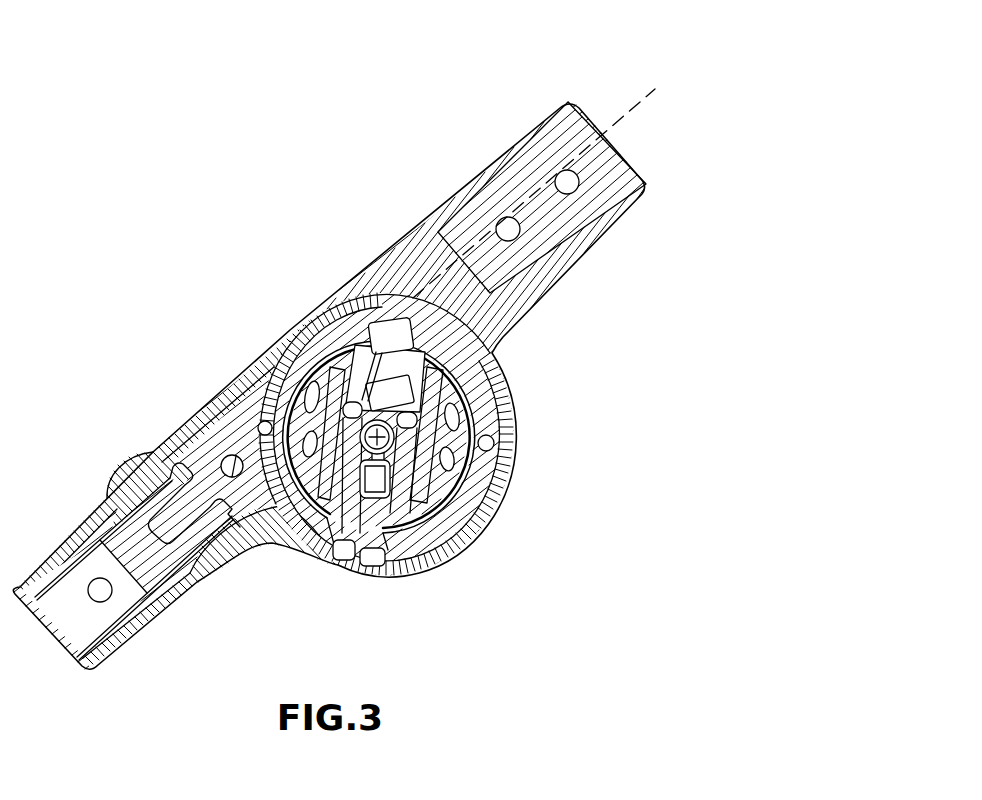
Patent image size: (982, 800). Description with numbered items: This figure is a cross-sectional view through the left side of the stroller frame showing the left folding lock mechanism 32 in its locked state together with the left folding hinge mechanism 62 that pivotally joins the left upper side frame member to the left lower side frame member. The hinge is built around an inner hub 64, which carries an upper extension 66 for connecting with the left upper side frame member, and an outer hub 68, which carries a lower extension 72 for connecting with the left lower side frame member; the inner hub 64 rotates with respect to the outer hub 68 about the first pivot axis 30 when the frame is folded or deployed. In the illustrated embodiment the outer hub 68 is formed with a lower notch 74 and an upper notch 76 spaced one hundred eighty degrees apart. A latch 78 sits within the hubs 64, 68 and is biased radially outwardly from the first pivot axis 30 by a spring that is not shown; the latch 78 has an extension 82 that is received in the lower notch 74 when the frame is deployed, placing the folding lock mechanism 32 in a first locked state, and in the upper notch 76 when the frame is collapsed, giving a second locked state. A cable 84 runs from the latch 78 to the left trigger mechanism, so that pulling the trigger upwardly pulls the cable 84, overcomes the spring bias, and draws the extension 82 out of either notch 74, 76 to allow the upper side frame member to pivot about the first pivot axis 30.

The first pivot axis 30 is at (358, 544).
The folding lock mechanism 32 is at (578, 428).
The left folding hinge mechanism 62 is at (640, 342).
The inner hub 64 is at (499, 347).
The upper extension 66 is at (600, 217).
The outer hub 68 is at (437, 535).
The lower extension 72 is at (120, 644).
The lower notch 74 is at (377, 552).
The upper notch 76 is at (381, 328).
The latch 78 is at (400, 462).
The extension 82 is at (353, 563).
The cable 84 is at (630, 112).